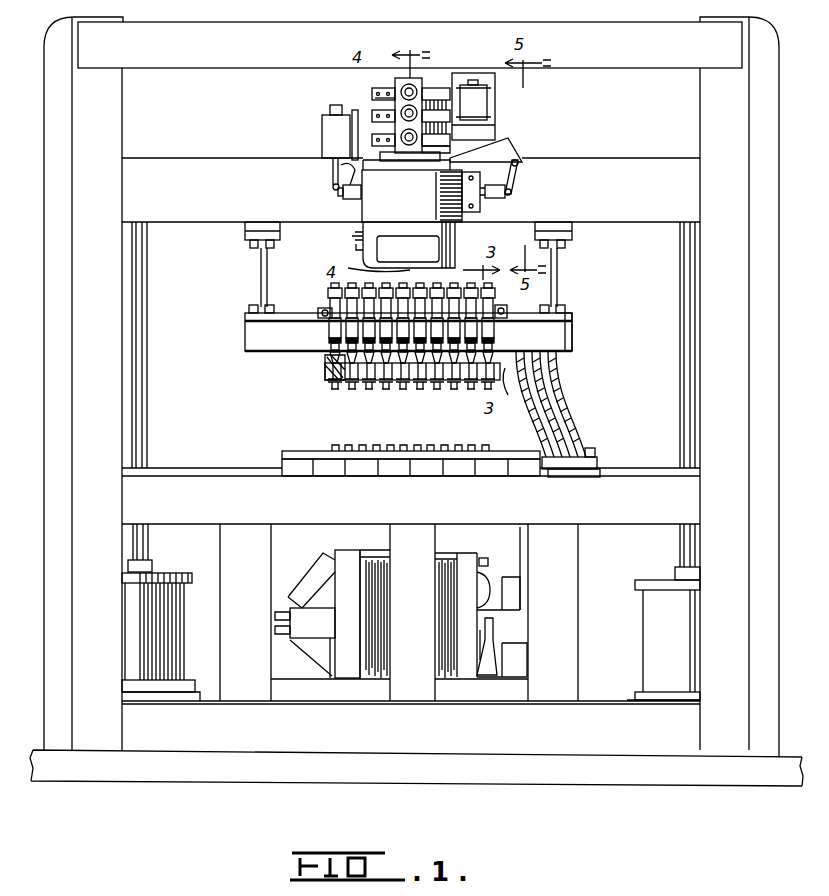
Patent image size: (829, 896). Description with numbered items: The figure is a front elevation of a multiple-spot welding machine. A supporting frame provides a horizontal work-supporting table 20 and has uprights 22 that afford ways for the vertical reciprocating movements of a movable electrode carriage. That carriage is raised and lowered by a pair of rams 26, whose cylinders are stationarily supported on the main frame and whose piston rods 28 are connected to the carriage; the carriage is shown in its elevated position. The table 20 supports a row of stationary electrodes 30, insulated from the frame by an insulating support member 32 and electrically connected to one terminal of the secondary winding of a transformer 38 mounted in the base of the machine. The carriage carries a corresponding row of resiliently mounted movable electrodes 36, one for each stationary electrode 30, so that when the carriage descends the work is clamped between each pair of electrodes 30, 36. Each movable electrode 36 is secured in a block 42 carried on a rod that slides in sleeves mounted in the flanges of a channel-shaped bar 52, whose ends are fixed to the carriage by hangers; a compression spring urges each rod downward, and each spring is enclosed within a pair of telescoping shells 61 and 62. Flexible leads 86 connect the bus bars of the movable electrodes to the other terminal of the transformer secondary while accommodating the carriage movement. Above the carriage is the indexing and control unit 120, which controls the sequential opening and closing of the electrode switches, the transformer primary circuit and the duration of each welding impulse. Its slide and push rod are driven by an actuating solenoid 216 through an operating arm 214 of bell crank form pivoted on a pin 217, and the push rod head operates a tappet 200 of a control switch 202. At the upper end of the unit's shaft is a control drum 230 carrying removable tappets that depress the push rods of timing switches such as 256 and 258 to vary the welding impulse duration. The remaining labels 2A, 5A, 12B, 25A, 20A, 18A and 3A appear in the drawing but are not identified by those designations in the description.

The uprights 22 is at (411, 387).
The upper cross plate 2A is at (244, 194).
The work-supporting table 20 is at (442, 509).
The piston rods 28 is at (134, 383).
The rams 26 is at (162, 645).
The movable electrodes 36 is at (512, 550).
The transformer 38 is at (465, 675).
The hanger rods 5A is at (268, 275).
The channel-shaped bar 52 is at (572, 338).
The telescoping shell 61 is at (324, 332).
The block 42 is at (326, 378).
The telescoping shell 62 is at (327, 362).
The head housing 12B is at (356, 238).
The indexing and control unit 120 is at (436, 182).
The timing switch 258 is at (400, 172).
The timing switch 256 is at (395, 128).
The valve fitting 25A is at (395, 80).
The control drum 230 is at (378, 102).
The control switch 202 is at (322, 128).
The link 20A is at (333, 180).
The tappet 200 is at (343, 196).
The actuating solenoid 216 is at (487, 105).
The pin 217 is at (520, 160).
The operating arm 214 is at (518, 176).
The knob 18A is at (503, 198).
The flexible leads 86 is at (568, 418).
The insulating support member 32 is at (355, 478).
The stationary electrodes 30 is at (377, 445).
The tray support 3A is at (300, 452).